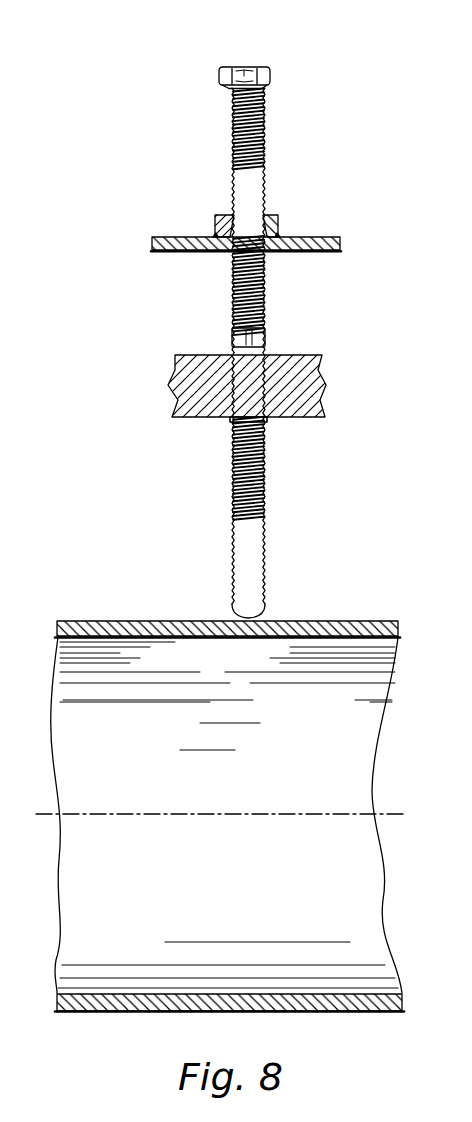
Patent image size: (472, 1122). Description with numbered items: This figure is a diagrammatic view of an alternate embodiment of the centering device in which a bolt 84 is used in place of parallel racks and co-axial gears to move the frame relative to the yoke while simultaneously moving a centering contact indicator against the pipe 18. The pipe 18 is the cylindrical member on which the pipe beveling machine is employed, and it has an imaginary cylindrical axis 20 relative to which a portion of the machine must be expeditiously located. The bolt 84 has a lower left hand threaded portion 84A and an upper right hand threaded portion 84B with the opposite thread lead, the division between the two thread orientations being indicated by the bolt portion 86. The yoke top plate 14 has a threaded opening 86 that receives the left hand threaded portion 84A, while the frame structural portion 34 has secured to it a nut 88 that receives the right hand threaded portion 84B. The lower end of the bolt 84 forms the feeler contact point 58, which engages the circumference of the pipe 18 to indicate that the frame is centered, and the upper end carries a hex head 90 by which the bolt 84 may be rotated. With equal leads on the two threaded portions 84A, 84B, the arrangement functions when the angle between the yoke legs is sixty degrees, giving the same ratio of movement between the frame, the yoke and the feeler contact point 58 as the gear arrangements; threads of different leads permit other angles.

The yoke top plate 14 is at (304, 368).
The pipe 18 is at (103, 625).
The cylindrical axis 20 is at (118, 813).
The frame structural portion 34 is at (333, 250).
The feeler contact point 58 is at (247, 636).
The bolt 84 is at (259, 322).
The left hand threaded portion 84A is at (267, 515).
The right hand threaded portion 84B is at (228, 146).
The bolt portion 86 is at (233, 335).
The nut 88 is at (277, 226).
The hex head 90 is at (268, 69).